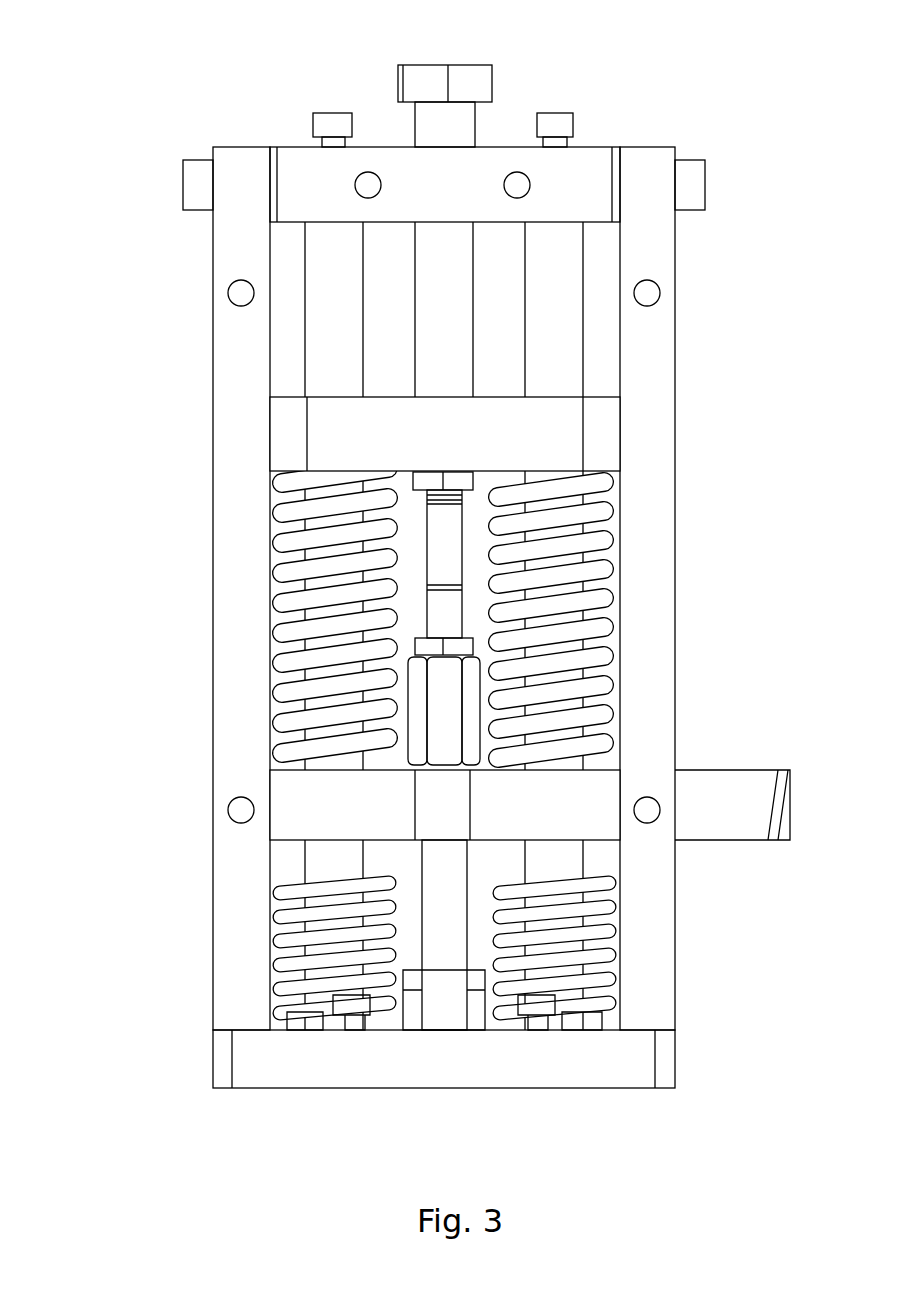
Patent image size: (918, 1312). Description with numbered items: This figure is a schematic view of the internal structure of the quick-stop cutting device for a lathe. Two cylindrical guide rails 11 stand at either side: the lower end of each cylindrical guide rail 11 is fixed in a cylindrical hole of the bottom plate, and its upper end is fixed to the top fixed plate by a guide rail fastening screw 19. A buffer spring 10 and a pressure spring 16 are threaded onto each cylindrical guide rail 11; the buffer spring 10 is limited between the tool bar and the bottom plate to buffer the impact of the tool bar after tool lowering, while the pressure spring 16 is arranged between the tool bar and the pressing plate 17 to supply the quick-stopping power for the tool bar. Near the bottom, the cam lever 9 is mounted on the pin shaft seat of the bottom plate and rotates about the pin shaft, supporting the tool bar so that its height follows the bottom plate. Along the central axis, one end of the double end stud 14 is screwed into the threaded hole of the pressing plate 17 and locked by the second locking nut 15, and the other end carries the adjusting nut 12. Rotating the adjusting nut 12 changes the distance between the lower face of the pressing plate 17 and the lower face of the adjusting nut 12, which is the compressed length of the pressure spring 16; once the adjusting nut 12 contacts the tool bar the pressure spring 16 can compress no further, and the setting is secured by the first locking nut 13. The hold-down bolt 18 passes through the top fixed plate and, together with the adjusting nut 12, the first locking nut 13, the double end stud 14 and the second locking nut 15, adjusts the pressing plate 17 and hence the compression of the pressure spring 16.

The cam lever 9 is at (445, 965).
The buffer spring 10 is at (551, 943).
The cylindrical guide rail 11 is at (335, 866).
The adjusting nut 12 is at (440, 722).
The first locking nut 13 is at (433, 647).
The double end stud 14 is at (446, 612).
The second locking nut 15 is at (430, 482).
The pressure spring 16 is at (333, 566).
The pressing plate 17 is at (543, 441).
The hold-down bolt 18 is at (433, 83).
The guide rail fastening screw 19 is at (555, 125).